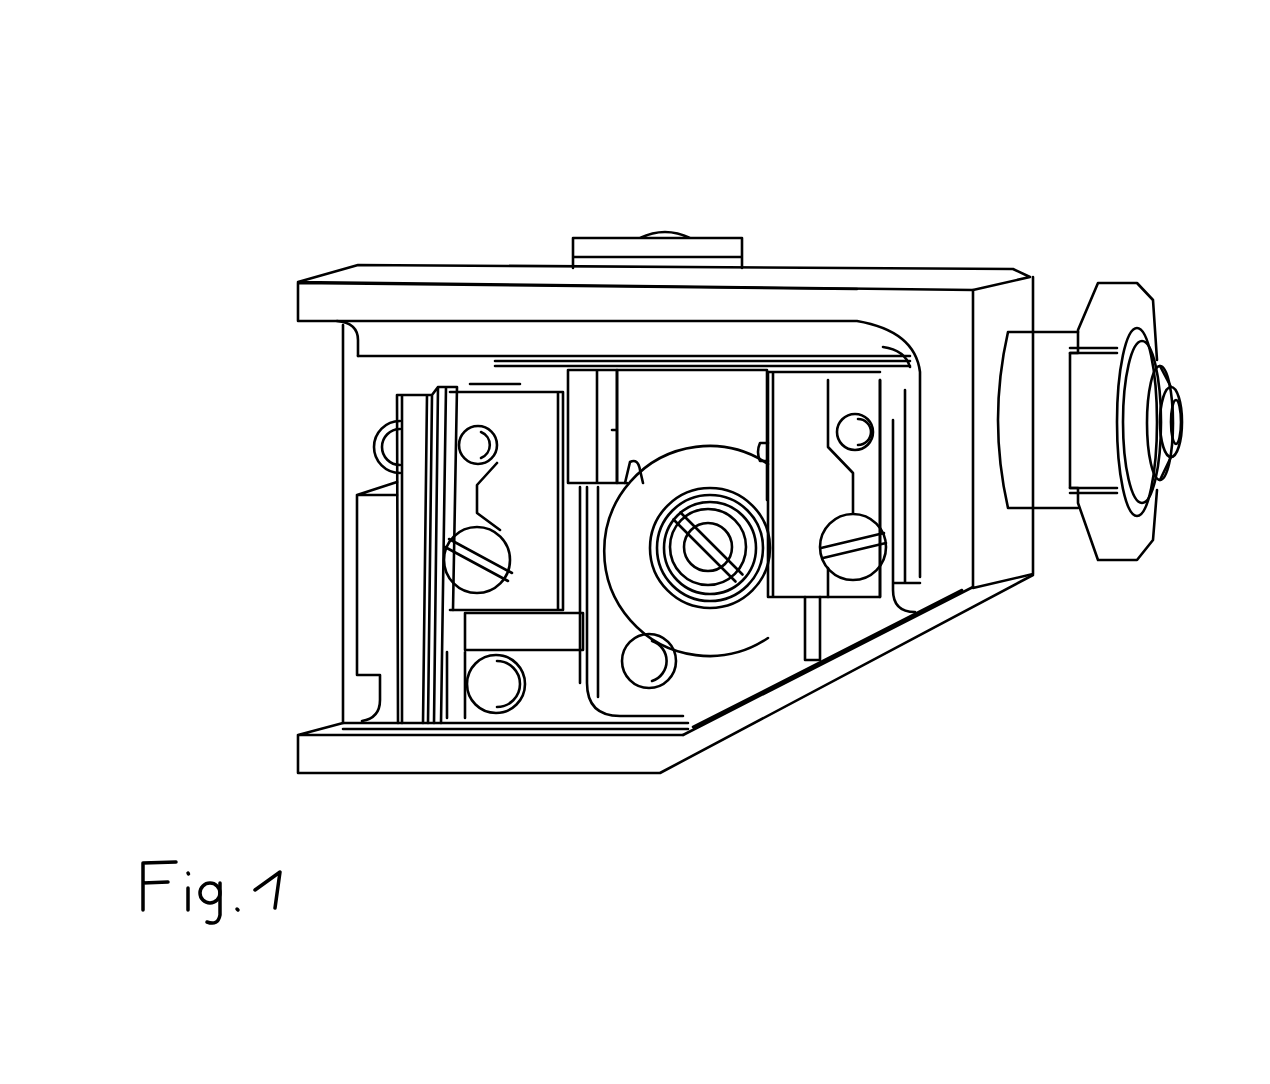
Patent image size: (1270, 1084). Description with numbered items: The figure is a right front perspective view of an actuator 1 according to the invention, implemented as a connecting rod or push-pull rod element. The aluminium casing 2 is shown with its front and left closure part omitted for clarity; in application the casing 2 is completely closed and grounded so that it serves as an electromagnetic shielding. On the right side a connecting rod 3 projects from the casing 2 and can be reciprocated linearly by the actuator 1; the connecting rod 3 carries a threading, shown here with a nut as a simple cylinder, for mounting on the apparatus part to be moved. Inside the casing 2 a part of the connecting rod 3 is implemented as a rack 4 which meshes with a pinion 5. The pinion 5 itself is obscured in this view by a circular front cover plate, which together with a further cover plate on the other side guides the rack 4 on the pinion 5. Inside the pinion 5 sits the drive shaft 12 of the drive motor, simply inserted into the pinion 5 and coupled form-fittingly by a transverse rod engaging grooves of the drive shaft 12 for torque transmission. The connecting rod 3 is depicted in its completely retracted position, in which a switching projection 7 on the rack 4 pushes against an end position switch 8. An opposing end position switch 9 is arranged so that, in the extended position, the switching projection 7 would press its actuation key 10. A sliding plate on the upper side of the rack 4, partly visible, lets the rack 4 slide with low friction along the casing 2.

The actuator 1 is at (1044, 158).
The aluminium casing 2 is at (402, 265).
The connecting rod 3 is at (1170, 391).
The rack 4 is at (698, 398).
The pinion 5 is at (763, 643).
The switching projection 7 is at (583, 385).
The end position switch 8 is at (528, 420).
The opposing end position switch 9 is at (813, 600).
The actuation key 10 is at (770, 452).
The drive shaft 12 is at (700, 585).